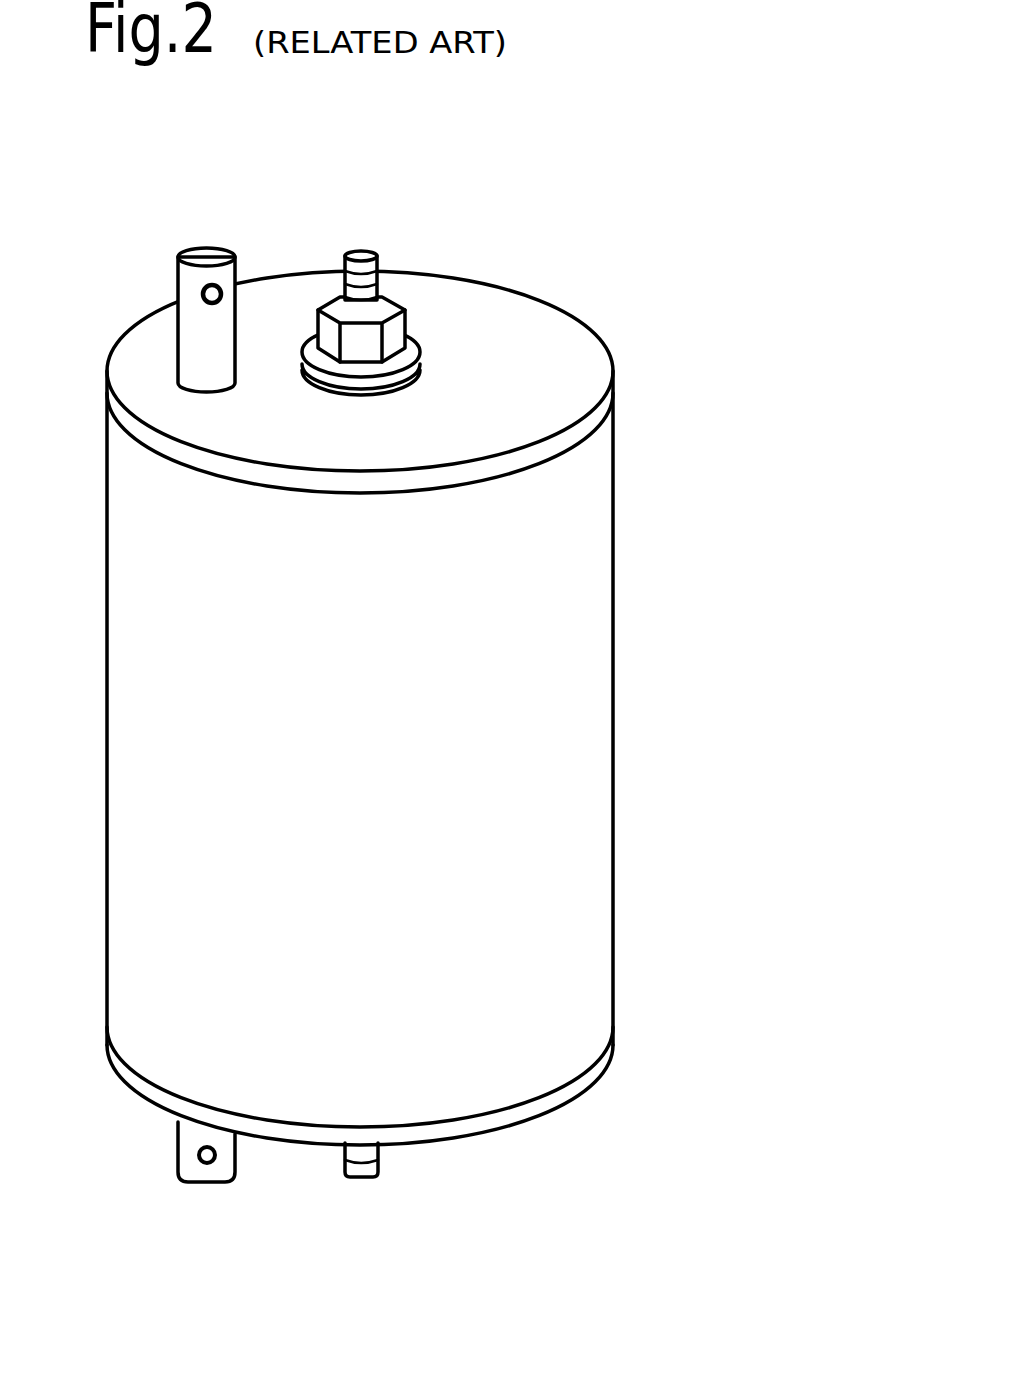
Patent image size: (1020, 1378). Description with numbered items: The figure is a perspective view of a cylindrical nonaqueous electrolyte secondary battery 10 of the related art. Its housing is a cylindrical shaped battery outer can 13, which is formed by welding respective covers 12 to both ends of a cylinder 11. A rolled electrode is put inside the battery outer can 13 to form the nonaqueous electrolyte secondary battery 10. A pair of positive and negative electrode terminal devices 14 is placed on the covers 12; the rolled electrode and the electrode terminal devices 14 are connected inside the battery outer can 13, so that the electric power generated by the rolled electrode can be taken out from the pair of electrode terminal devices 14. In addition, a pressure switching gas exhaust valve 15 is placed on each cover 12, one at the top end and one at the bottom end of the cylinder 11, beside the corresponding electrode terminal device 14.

The nonaqueous electrolyte secondary battery 10 is at (766, 167).
The cylinder 11 is at (540, 707).
The cover 12 is at (517, 458).
The battery outer can 13 is at (762, 579).
The electrode terminal device 14 is at (399, 260).
The pressure switching gas exhaust valve 15 is at (185, 251).